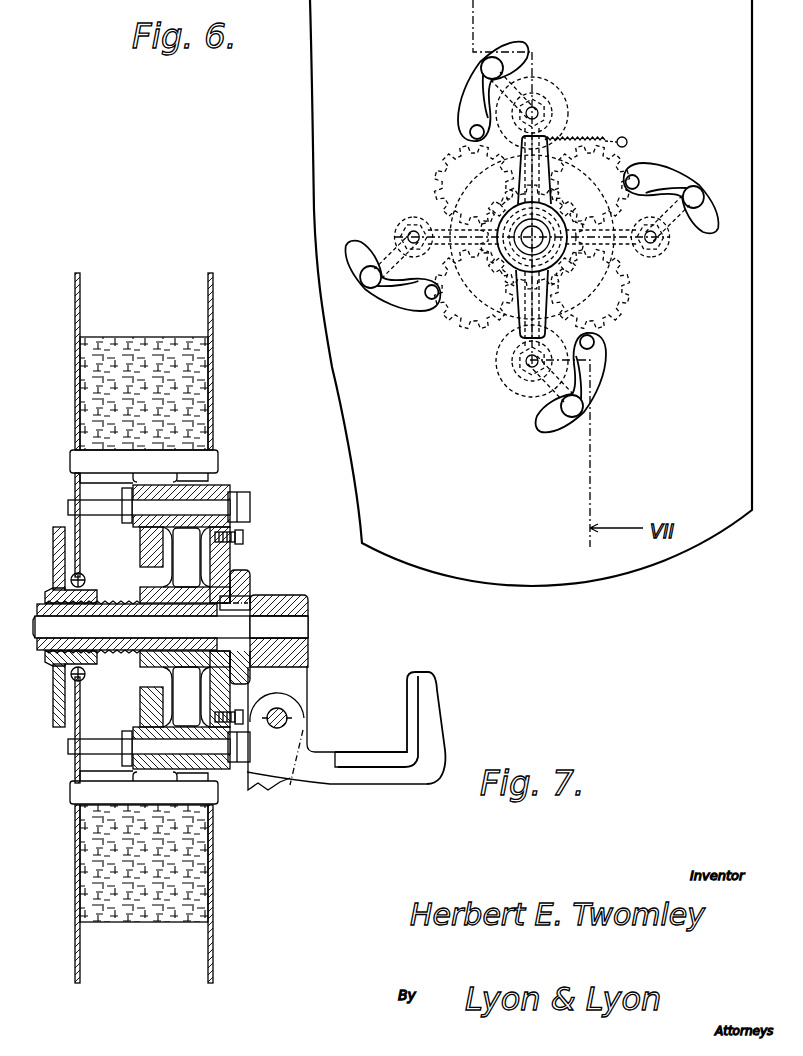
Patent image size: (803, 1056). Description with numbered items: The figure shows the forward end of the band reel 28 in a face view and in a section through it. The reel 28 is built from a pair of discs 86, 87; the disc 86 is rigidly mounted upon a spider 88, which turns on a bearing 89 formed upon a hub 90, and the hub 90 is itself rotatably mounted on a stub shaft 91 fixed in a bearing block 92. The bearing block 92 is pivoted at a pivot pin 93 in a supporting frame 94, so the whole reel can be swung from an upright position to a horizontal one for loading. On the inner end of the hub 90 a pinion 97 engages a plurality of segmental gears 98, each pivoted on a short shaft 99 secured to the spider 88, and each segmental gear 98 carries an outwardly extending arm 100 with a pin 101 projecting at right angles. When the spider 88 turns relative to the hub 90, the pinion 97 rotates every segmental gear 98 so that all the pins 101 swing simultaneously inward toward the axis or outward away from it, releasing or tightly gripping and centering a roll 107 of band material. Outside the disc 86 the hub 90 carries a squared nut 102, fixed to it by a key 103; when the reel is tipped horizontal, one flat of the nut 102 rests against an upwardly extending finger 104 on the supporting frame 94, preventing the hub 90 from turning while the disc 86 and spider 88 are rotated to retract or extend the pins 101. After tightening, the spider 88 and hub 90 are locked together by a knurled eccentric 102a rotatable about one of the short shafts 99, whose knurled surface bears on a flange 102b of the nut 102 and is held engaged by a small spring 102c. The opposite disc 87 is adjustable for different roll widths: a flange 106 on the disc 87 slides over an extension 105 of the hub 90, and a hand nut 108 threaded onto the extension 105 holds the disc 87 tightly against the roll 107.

In FIG. 7, the reel 28 is at (211, 277).
In FIG. 7, the disc 86 is at (213, 318).
In FIG. 6, the disc 87 is at (322, 65).
In FIG. 7, the disc 87 is at (75, 308).
In FIG. 6, the spider 88 is at (626, 258).
In FIG. 7, the spider 88 is at (200, 558).
In FIG. 7, the bearing 89 is at (186, 612).
In FIG. 7, the hub 90 is at (200, 606).
In FIG. 6, the stub shaft 91 is at (527, 245).
In FIG. 7, the stub shaft 91 is at (302, 598).
In FIG. 7, the bearing block 92 is at (312, 670).
In FIG. 7, the pivot pin 93 is at (286, 712).
In FIG. 7, the supporting frame 94 is at (326, 782).
In FIG. 6, the pinion 97 is at (588, 278).
In FIG. 7, the pinion 97 is at (140, 583).
In FIG. 6, the segmental gear 98 is at (440, 316).
In FIG. 7, the segmental gear 98 is at (140, 567).
In FIG. 6, the short shaft 99 is at (412, 233).
In FIG. 7, the short shaft 99 is at (187, 507).
In FIG. 6, the arm 100 is at (386, 252).
In FIG. 7, the arm 100 is at (135, 482).
In FIG. 6, the pin 101 is at (372, 286).
In FIG. 7, the pin 101 is at (70, 460).
In FIG. 6, the nut 102 is at (478, 190).
In FIG. 7, the nut 102 is at (255, 572).
In FIG. 6, the knurled eccentric 102a is at (558, 110).
In FIG. 7, the knurled eccentric 102a is at (226, 494).
In FIG. 6, the flange 102b is at (500, 330).
In FIG. 7, the flange 102b is at (246, 536).
In FIG. 6, the spring 102c is at (590, 136).
In FIG. 7, the key 103 is at (262, 600).
In FIG. 7, the finger 104 is at (420, 705).
In FIG. 7, the extension 105 is at (116, 662).
In FIG. 7, the flange 106 is at (80, 574).
In FIG. 7, the roll 107 is at (128, 337).
In FIG. 6, the hand nut 108 is at (540, 300).
In FIG. 7, the hand nut 108 is at (50, 698).